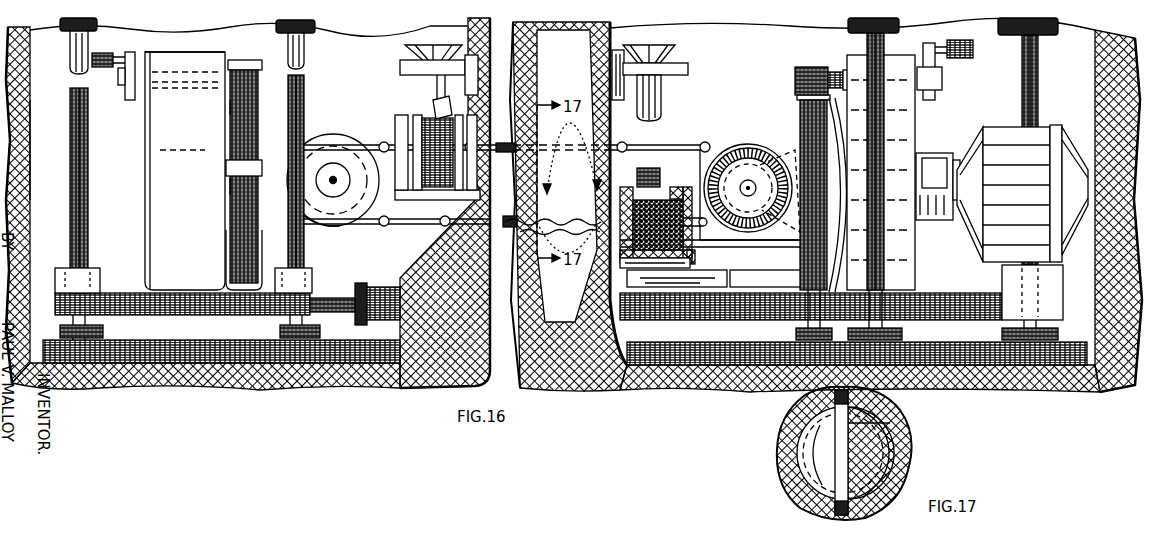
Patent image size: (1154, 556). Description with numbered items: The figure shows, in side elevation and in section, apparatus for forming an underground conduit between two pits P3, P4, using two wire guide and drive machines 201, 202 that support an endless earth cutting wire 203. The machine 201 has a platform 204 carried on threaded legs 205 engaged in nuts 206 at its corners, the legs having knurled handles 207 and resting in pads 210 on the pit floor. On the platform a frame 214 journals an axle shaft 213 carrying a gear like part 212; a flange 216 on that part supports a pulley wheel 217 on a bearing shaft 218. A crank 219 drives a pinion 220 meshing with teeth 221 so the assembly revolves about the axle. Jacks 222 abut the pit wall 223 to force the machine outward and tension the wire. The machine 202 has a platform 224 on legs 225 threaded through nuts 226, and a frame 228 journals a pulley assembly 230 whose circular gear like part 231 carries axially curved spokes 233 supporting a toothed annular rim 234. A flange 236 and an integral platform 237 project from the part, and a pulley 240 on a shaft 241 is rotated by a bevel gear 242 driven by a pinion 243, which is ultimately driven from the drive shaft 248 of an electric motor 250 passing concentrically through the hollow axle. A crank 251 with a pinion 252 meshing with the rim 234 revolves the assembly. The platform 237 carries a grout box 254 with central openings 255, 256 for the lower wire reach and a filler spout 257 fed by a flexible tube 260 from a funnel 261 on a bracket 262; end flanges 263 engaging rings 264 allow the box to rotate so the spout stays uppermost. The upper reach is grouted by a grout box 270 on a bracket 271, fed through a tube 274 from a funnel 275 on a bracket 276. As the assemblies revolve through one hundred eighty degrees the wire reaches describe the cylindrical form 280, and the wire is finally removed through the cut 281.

In FIG. 16, the wire guide and drive machine 201 is at (132, 241).
In FIG. 16, the wire guide and drive machine 202 is at (755, 136).
In FIG. 16, the endless earth cutting wire 203 is at (362, 147).
In FIG. 16, the platform 204 is at (210, 312).
In FIG. 16, the threaded legs 205 is at (70, 49).
In FIG. 17, the threaded legs 205 is at (852, 422).
In FIG. 16, the nuts 206 is at (100, 283).
In FIG. 16, the knurled handles 207 is at (64, 19).
In FIG. 16, the pads 210 is at (104, 330).
In FIG. 16, the gear like part 212 is at (235, 133).
In FIG. 16, the axle shaft 213 is at (228, 185).
In FIG. 16, the frame 214 is at (203, 58).
In FIG. 16, the flange 216 is at (310, 228).
In FIG. 16, the pulley wheel 217 is at (350, 142).
In FIG. 16, the bearing shaft 218 is at (340, 181).
In FIG. 16, the crank 219 is at (127, 97).
In FIG. 16, the pinion 220 is at (256, 50).
In FIG. 16, the teeth 221 is at (233, 107).
In FIG. 16, the jacks 222 is at (362, 285).
In FIG. 16, the pit wall 223 is at (400, 325).
In FIG. 16, the platform 224 is at (702, 310).
In FIG. 16, the legs 225 is at (884, 50).
In FIG. 16, the nuts 226 is at (1000, 270).
In FIG. 16, the frame 228 is at (915, 117).
In FIG. 16, the pulley assembly 230 is at (760, 148).
In FIG. 16, the circular gear like part 231 is at (816, 290).
In FIG. 16, the spokes 233 is at (838, 128).
In FIG. 16, the toothed annular rim 234 is at (800, 274).
In FIG. 16, the flange 236 is at (744, 200).
In FIG. 16, the platform 237 is at (648, 280).
In FIG. 16, the pulley 240 is at (752, 239).
In FIG. 16, the shaft 241 is at (757, 187).
In FIG. 16, the bevel gear 242 is at (706, 172).
In FIG. 16, the pinion 243 is at (744, 165).
In FIG. 16, the drive shaft 248 is at (928, 218).
In FIG. 16, the electric motor 250 is at (1003, 126).
In FIG. 16, the crank 251 is at (956, 60).
In FIG. 16, the pinion 252 is at (796, 68).
In FIG. 16, the grout box 254 is at (622, 257).
In FIG. 16, the central opening 255 is at (605, 220).
In FIG. 16, the central opening 256 is at (690, 240).
In FIG. 16, the filler spout 257 is at (656, 225).
In FIG. 16, the flexible tube 260 is at (661, 95).
In FIG. 16, the funnel 261 is at (652, 47).
In FIG. 16, the bracket 262 is at (688, 68).
In FIG. 16, the end flanges 263 is at (640, 170).
In FIG. 16, the rings 264 is at (624, 274).
In FIG. 16, the grout box 270 is at (432, 122).
In FIG. 16, the bracket 271 is at (392, 196).
In FIG. 16, the tube 274 is at (437, 100).
In FIG. 16, the funnel 275 is at (417, 36).
In FIG. 16, the bracket 276 is at (417, 75).
In FIG. 17, the cylindrical form 280 is at (917, 451).
In FIG. 17, the cut 281 is at (820, 440).
In FIG. 16, the pit P3 is at (58, 125).
In FIG. 16, the pit P4 is at (612, 33).